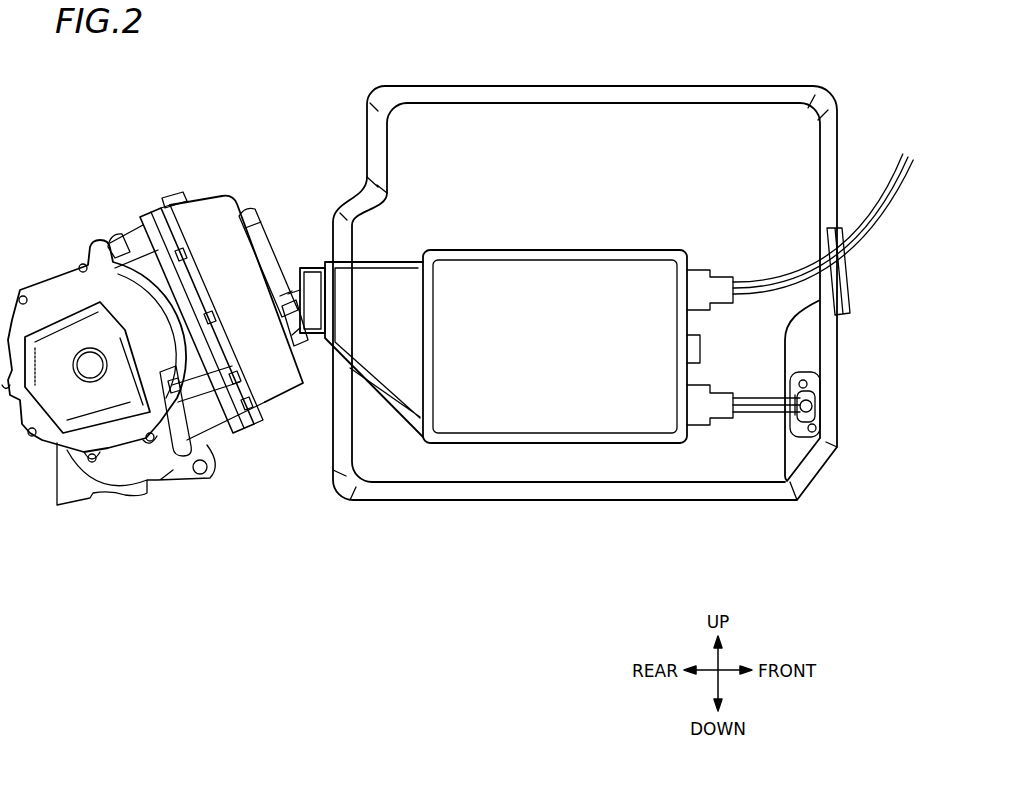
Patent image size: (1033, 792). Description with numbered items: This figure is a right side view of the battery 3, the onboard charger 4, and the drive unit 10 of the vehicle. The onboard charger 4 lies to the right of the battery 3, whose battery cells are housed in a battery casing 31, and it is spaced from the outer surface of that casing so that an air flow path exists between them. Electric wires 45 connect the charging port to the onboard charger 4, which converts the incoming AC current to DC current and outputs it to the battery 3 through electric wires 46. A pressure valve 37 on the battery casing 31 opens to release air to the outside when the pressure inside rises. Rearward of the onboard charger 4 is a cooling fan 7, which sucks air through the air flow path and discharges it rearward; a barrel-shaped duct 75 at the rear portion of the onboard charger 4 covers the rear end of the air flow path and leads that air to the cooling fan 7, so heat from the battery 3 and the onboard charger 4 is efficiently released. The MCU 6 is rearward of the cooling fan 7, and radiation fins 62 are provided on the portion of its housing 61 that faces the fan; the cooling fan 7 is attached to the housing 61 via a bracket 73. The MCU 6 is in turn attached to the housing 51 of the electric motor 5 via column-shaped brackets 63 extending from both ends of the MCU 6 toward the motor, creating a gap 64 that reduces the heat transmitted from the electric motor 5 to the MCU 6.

The drive unit 10 is at (62, 164).
The battery 3 is at (614, 85).
The battery casing 31 is at (725, 128).
The onboard charger 4 is at (597, 437).
The duct 75 is at (383, 362).
The cooling fan 7 is at (313, 262).
The electric wires 45 is at (892, 192).
The pressure valve 37 is at (853, 287).
The electric wires 46 is at (770, 413).
The electric motor 5 is at (51, 282).
The housing 51 is at (165, 425).
The MCU 6 is at (231, 196).
The housing 61 is at (213, 233).
The radiation fins 62 is at (255, 233).
The brackets 63 is at (125, 250).
The gap 64 is at (153, 275).
The bracket 73 is at (291, 305).